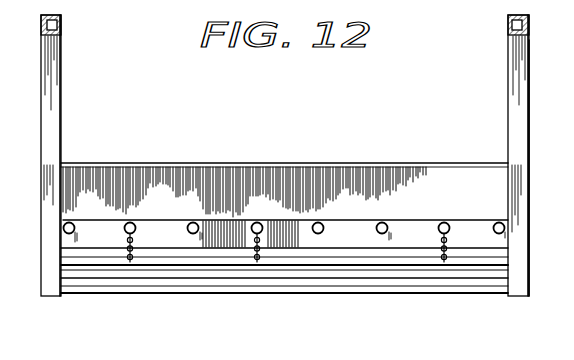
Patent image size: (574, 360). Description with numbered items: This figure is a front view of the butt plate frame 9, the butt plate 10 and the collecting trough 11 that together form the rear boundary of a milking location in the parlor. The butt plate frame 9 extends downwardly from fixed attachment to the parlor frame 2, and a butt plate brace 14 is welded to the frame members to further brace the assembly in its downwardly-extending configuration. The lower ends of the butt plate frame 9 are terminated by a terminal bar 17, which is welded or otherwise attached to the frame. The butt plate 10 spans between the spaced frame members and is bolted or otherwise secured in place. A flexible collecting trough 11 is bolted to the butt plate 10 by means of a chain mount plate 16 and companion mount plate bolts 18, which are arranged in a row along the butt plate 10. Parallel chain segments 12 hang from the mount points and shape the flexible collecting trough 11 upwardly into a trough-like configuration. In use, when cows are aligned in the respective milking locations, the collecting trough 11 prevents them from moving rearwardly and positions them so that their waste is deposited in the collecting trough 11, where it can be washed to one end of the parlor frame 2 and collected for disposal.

The parlor frame 2 is at (59, 12).
The butt plate frame 9 is at (534, 115).
The butt plate 10 is at (456, 183).
The collecting trough 11 is at (427, 272).
The chain segments 12 is at (137, 240).
The butt plate brace 14 is at (62, 117).
The chain mount plate 16 is at (300, 238).
The terminal bar 17 is at (133, 283).
The mount plate bolts 18 is at (327, 232).